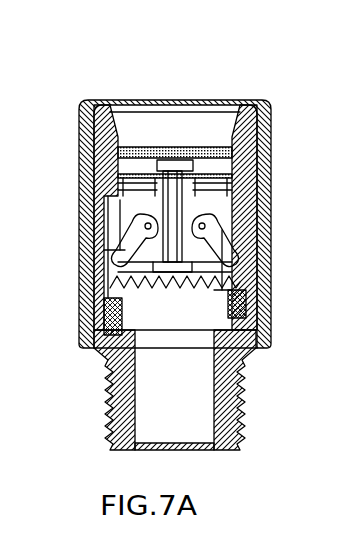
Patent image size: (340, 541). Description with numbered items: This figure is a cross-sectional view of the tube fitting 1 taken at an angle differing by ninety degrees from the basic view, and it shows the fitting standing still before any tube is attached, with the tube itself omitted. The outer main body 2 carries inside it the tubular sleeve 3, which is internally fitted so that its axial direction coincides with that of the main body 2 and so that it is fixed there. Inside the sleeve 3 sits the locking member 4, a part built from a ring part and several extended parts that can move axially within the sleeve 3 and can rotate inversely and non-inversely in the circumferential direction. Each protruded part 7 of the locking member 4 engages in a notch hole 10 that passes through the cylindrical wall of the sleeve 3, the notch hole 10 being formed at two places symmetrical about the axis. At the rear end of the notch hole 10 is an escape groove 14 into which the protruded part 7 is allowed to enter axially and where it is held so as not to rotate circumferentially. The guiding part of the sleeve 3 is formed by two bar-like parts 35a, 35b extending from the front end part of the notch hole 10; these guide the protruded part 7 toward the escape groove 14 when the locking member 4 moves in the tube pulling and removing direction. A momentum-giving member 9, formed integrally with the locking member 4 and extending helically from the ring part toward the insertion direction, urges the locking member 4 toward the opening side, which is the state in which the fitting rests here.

The tube fitting 1 is at (261, 80).
The main body 2 is at (83, 160).
The sleeve 3 is at (262, 157).
The locking member 4 is at (262, 190).
The protruded part 7 is at (162, 146).
The momentum-giving member 9 is at (250, 278).
The notch hole 10 is at (157, 217).
The escape groove 14 is at (185, 147).
The bar-like part 35a is at (258, 226).
The bar-like part 35b is at (80, 233).